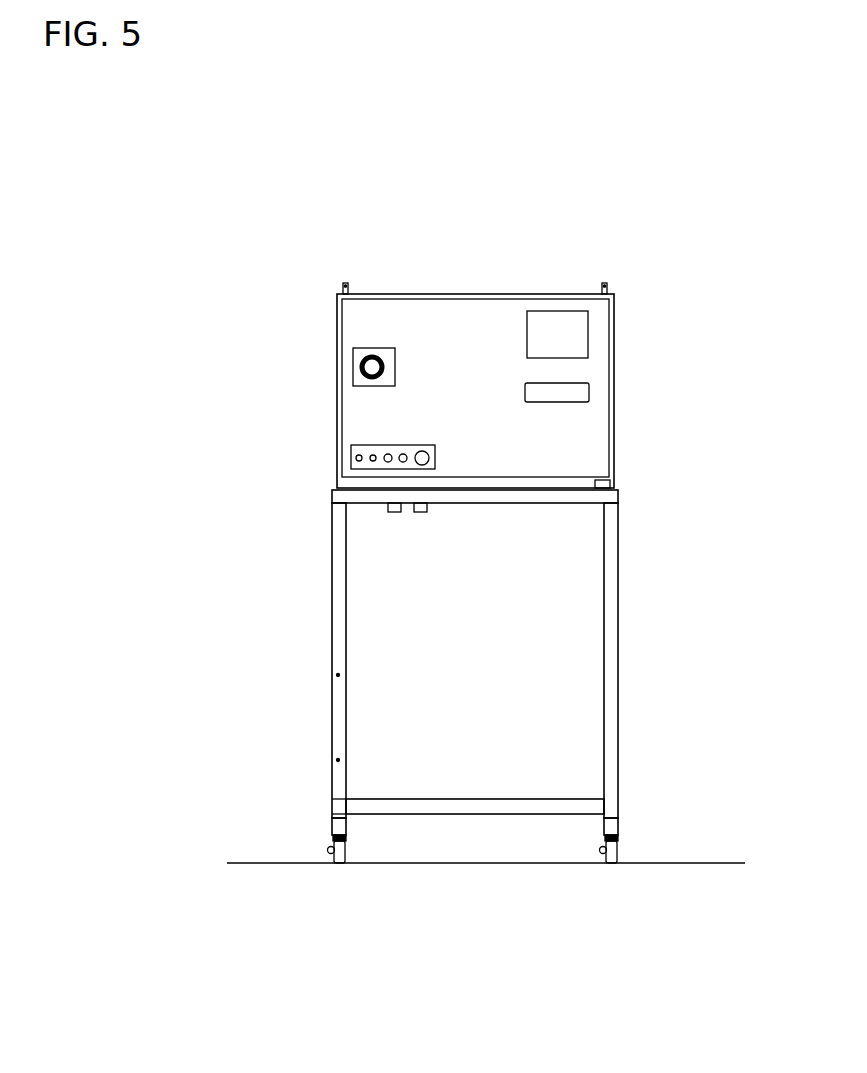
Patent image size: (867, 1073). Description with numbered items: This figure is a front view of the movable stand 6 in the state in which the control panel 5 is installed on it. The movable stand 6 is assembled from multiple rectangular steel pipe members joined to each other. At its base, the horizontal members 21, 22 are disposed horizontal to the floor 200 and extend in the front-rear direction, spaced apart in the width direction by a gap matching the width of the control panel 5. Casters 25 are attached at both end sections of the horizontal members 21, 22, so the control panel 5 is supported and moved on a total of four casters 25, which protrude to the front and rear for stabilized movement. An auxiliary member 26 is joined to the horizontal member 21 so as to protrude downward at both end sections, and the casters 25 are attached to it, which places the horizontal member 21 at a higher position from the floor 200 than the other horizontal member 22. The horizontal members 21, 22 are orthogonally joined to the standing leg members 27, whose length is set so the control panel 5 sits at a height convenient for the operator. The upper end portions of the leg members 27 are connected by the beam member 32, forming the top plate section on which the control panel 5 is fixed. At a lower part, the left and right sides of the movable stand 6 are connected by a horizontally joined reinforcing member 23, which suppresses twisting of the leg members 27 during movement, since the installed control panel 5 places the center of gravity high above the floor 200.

The control panel 5 is at (557, 433).
The movable stand 6 is at (470, 709).
The beam member 32 is at (523, 498).
The leg member 27 is at (338, 712).
The horizontal member 21 is at (338, 807).
The reinforcing member 23 is at (463, 808).
The auxiliary member 26 is at (338, 825).
The horizontal member 22 is at (612, 828).
The caster 25 is at (336, 867).
The floor 200 is at (705, 863).